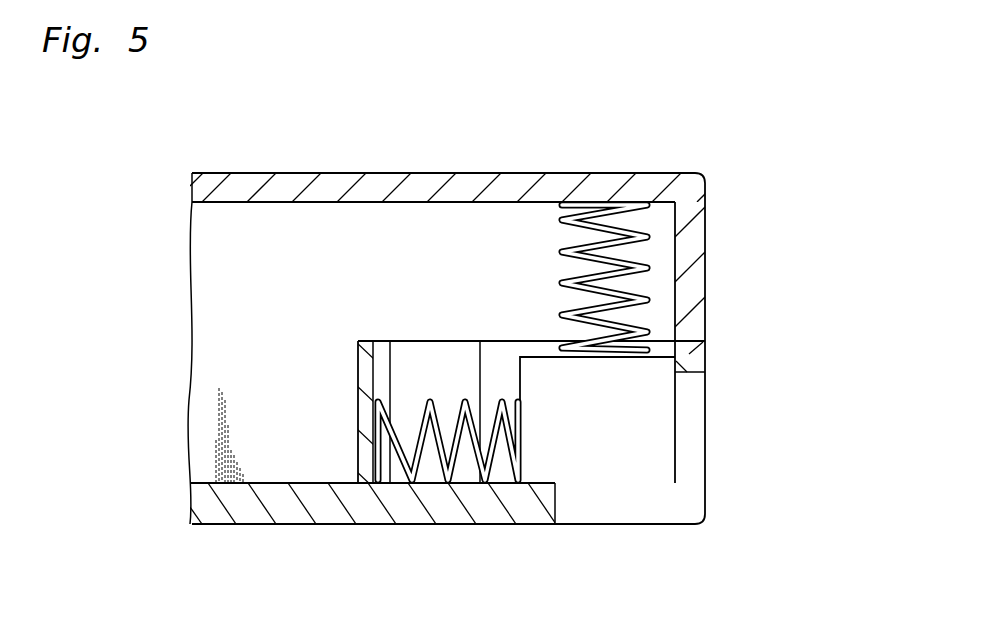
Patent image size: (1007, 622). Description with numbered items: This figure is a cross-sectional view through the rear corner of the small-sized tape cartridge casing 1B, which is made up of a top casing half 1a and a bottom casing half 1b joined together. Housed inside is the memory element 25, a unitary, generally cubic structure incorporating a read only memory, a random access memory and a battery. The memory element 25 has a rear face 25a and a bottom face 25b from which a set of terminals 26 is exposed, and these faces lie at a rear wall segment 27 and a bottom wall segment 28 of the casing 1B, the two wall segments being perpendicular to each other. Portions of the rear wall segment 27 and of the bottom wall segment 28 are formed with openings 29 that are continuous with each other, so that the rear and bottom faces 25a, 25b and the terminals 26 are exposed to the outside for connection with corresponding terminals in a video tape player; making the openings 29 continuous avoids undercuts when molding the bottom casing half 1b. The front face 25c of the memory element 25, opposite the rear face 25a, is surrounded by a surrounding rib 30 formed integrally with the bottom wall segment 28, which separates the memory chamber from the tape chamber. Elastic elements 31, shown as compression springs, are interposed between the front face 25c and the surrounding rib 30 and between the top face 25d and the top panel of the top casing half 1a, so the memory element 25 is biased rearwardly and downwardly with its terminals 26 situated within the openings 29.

The casing 1B is at (393, 166).
The top casing half 1a is at (310, 172).
The bottom casing half 1b is at (262, 525).
The memory element 25 is at (676, 384).
The rear face 25a is at (675, 402).
The bottom face 25b is at (650, 484).
The front face 25c is at (520, 368).
The top face 25d is at (553, 357).
The set of terminals 26 is at (617, 487).
The rear wall segment 27 is at (706, 438).
The bottom wall segment 28 is at (513, 525).
The openings 29 is at (588, 508).
The surrounding rib 30 is at (357, 366).
The elastic elements 31 is at (563, 249).